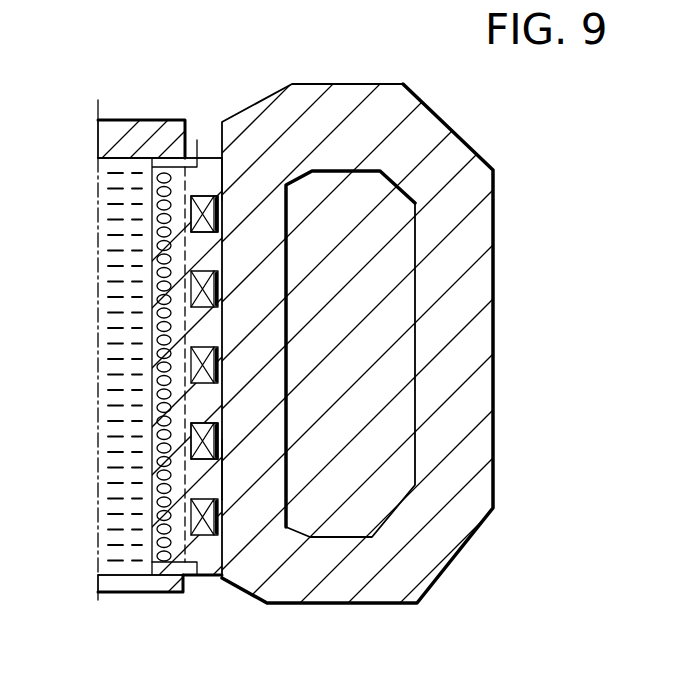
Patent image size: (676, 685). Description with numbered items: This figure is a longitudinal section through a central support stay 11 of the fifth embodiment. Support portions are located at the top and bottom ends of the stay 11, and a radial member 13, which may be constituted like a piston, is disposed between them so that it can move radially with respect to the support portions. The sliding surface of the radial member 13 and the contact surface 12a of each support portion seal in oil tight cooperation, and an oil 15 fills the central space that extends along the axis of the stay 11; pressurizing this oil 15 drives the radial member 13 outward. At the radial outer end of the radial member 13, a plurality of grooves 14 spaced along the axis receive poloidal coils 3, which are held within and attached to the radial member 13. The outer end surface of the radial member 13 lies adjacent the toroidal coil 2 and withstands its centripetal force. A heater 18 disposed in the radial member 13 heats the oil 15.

The toroidal coil 2 is at (362, 83).
The poloidal coil 3 is at (220, 222).
The central support stay 11 is at (120, 117).
The contact surface 12a is at (137, 160).
The radial member 13 is at (213, 158).
The groove 14 is at (222, 204).
The oil 15 is at (105, 200).
The heater 18 is at (161, 577).